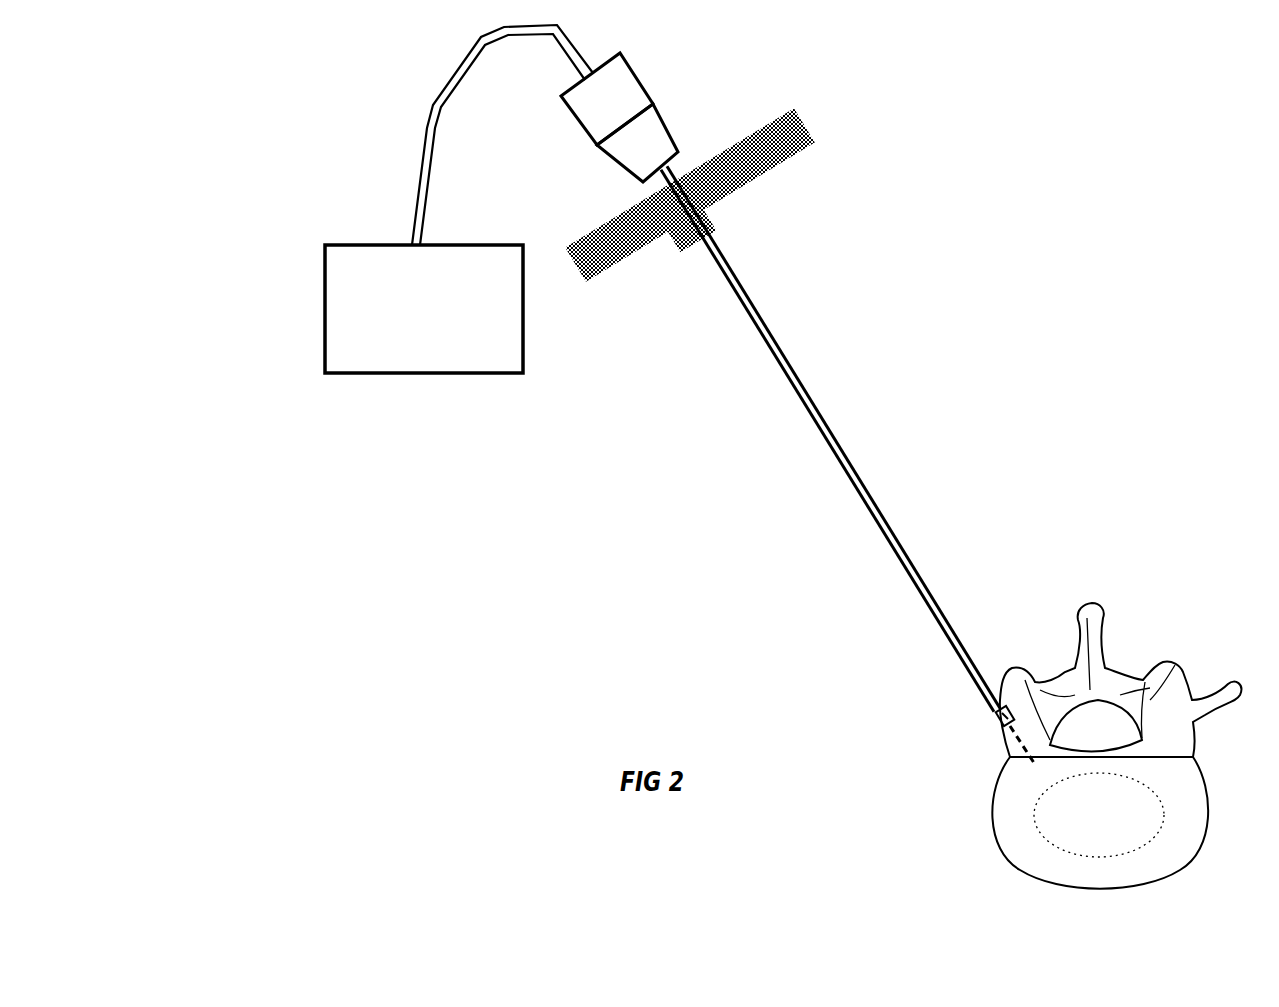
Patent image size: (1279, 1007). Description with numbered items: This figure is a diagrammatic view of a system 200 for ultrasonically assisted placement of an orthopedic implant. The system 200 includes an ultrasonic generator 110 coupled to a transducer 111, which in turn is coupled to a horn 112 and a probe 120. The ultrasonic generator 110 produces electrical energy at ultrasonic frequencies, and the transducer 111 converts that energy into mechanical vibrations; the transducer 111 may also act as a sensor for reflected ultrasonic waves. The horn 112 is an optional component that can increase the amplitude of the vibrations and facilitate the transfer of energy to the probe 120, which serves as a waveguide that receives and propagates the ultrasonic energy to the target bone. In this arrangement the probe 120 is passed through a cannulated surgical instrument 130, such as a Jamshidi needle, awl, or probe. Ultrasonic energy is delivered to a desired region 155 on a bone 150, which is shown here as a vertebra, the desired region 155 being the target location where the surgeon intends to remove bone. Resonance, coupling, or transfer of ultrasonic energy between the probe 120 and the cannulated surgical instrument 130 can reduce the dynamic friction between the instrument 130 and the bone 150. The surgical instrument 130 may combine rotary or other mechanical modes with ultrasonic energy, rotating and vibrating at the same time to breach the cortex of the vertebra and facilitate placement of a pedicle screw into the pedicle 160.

The system 200 is at (118, 24).
The ultrasonic generator 110 is at (484, 394).
The transducer 111 is at (652, 68).
The horn 112 is at (601, 168).
The probe 120 is at (675, 164).
The cannulated surgical instrument 130 is at (752, 276).
The bone 150 is at (1126, 590).
The desired region 155 is at (987, 720).
The pedicle 160 is at (1017, 748).